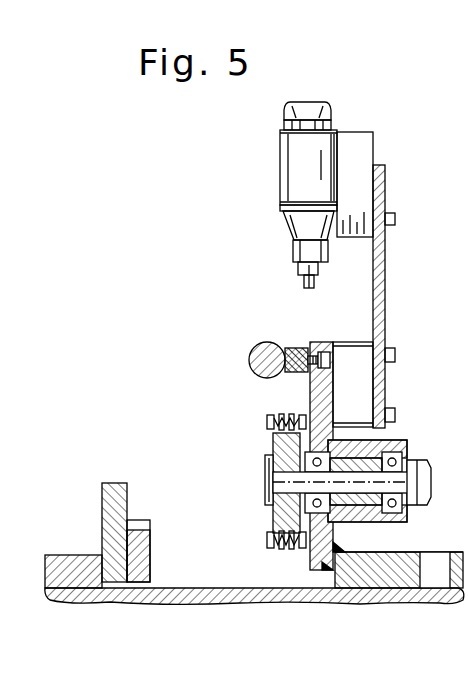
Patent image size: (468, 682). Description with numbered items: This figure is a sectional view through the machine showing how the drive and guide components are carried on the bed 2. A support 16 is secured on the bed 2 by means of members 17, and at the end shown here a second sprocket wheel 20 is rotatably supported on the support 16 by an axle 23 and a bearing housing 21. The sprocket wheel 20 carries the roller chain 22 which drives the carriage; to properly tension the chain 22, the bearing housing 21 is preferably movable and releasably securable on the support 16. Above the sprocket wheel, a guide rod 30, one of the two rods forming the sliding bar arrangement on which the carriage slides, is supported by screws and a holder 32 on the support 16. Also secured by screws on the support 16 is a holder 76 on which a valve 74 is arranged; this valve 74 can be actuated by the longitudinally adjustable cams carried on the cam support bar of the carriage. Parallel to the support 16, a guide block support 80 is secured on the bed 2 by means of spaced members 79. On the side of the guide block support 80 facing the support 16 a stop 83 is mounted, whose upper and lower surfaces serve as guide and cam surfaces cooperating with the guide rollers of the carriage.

The bed 2 is at (239, 595).
The support 16 is at (320, 560).
The members 17 is at (392, 578).
The second sprocket wheel 20 is at (283, 450).
The bearing housing 21 is at (405, 442).
The roller chain 22 is at (268, 412).
The axle 23 is at (428, 481).
The guide rod 30 is at (258, 346).
The holder 32 is at (298, 346).
The valve 74 is at (293, 172).
The holder 76 is at (387, 289).
The spaced members 79 is at (80, 574).
The guide block support 80 is at (118, 496).
The stop 83 is at (138, 549).